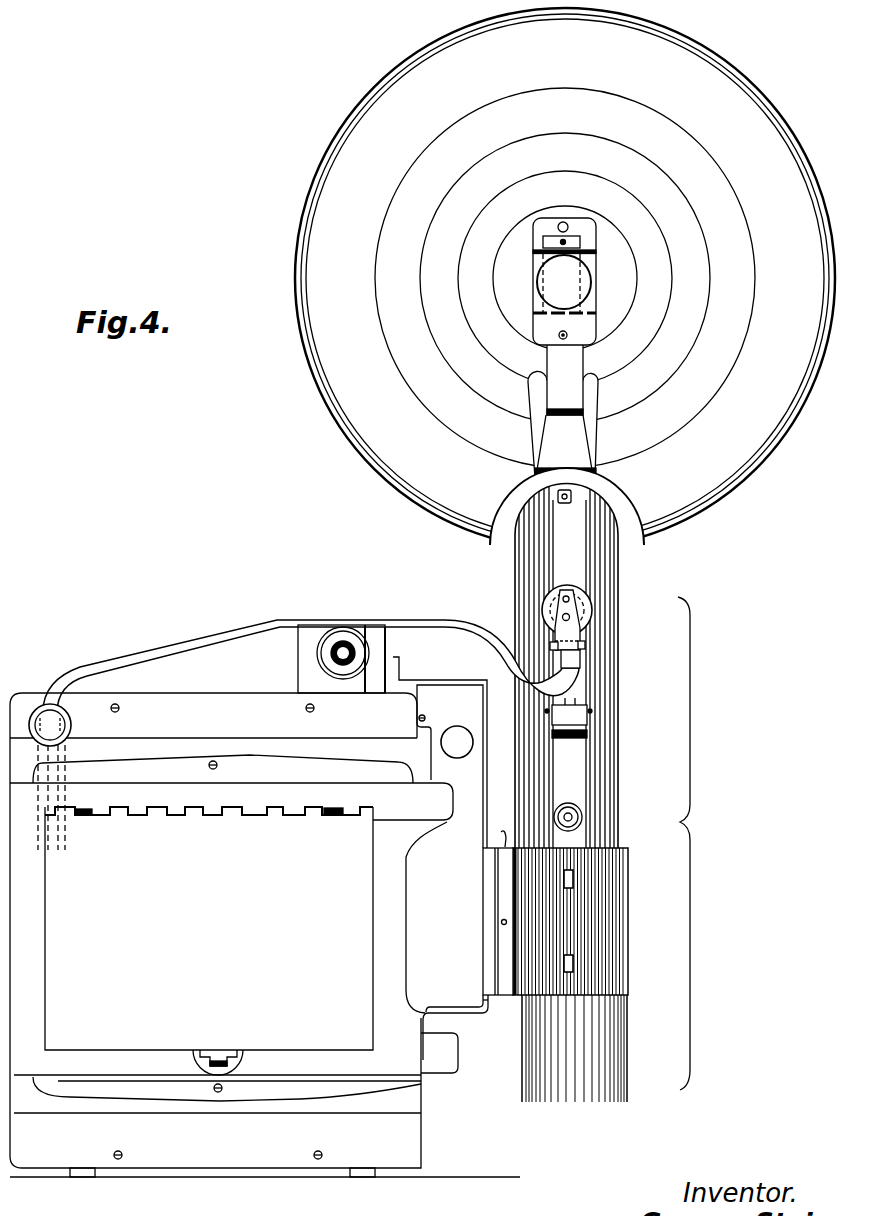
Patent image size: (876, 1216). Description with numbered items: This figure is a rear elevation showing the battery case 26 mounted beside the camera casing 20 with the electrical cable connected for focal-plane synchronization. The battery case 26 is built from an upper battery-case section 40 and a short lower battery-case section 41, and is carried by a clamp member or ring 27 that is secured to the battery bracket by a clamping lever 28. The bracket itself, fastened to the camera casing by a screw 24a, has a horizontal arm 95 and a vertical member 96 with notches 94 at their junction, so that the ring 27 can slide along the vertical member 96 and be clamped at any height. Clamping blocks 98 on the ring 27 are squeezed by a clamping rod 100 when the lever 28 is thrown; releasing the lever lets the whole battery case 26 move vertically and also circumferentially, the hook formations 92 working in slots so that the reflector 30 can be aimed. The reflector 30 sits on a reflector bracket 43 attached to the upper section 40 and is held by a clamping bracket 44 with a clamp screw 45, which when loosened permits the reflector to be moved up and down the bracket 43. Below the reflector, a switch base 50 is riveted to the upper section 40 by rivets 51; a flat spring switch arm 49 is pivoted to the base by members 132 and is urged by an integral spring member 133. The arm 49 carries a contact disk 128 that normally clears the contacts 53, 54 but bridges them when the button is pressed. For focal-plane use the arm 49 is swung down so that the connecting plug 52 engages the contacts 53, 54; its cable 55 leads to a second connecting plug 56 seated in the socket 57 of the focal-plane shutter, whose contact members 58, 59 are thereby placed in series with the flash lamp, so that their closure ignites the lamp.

The camera casing 20 is at (200, 1158).
The screw 24a is at (402, 667).
The battery case 26 is at (705, 843).
The clamp member or ring 27 is at (614, 910).
The clamping lever 28 is at (498, 828).
The reflector 30 is at (338, 132).
The upper battery-case section 40 is at (606, 692).
The lower battery-case section 41 is at (608, 1040).
The reflector bracket 43 is at (577, 360).
The clamping bracket 44 is at (541, 333).
The clamp screw 45 is at (538, 283).
The switch arm 49 is at (578, 758).
The switch base 50 is at (582, 666).
The rivets 51 is at (552, 645).
The connecting plug 52 is at (592, 607).
The contact 53 is at (548, 596).
The contact 54 is at (562, 612).
The cable 55 is at (142, 657).
The second connecting plug 56 is at (70, 724).
The socket 57 is at (44, 703).
The contact member 58 is at (60, 852).
The contact member 59 is at (40, 852).
The hook formations 92 is at (568, 953).
The notches 94 is at (491, 1003).
The horizontal arm 95 is at (458, 1010).
The vertical member 96 is at (486, 808).
The clamping blocks 98 is at (492, 950).
The clamping rod 100 is at (500, 922).
The contact disk 128 is at (582, 817).
The pivot members 132 is at (547, 711).
The spring member 133 is at (569, 718).